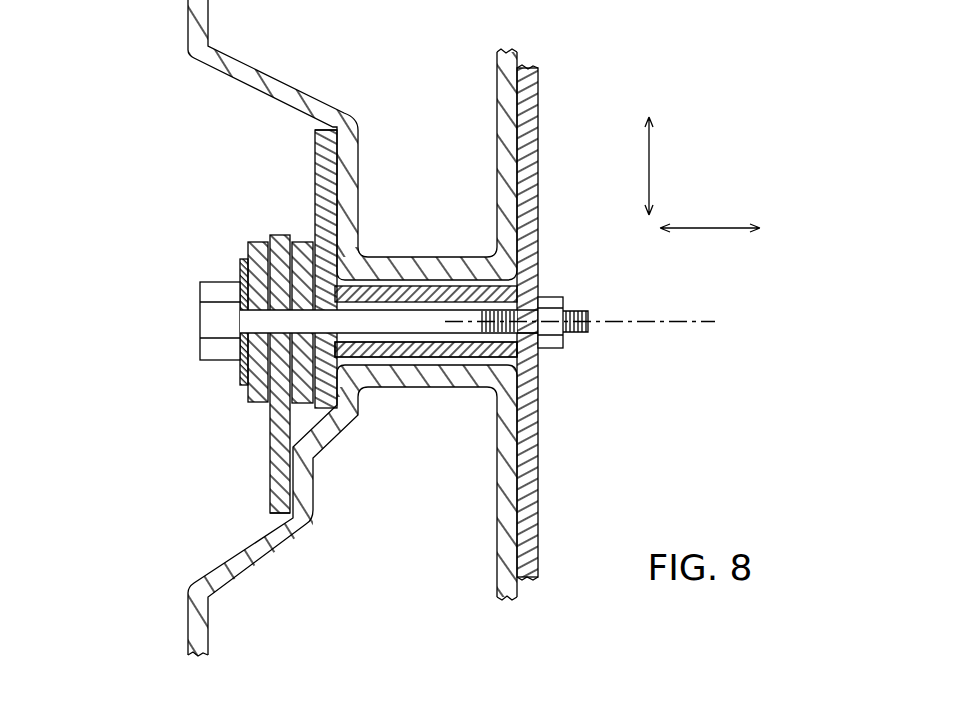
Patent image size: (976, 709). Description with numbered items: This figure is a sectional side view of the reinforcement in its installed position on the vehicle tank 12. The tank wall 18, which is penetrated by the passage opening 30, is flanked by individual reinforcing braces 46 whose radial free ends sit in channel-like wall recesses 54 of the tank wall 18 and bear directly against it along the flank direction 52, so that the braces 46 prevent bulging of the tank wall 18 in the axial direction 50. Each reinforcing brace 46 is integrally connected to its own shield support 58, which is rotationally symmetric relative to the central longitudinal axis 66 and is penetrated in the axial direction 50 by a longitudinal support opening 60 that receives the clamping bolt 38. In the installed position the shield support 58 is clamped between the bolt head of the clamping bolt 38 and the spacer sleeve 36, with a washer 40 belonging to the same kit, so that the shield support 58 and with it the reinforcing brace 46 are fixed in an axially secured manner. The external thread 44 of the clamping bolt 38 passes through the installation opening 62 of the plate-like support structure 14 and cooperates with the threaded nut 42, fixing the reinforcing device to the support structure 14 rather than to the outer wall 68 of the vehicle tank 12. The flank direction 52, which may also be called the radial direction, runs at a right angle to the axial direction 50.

The vehicle tank 12 is at (485, 208).
The support structure 14 is at (527, 175).
The tank wall 18 is at (347, 150).
The passage opening 30 is at (430, 280).
The spacer sleeve 36 is at (432, 361).
The clamping bolt 38 is at (190, 323).
The washer 40 is at (227, 271).
The threaded nut 42 is at (550, 273).
The external thread 44 is at (580, 343).
The reinforcing brace 46 is at (305, 240).
The axial direction 50 is at (710, 228).
The flank direction 52 is at (652, 165).
The wall recess 54 is at (309, 129).
The shield support 58 is at (278, 232).
The support opening 60 is at (392, 335).
The installation opening 62 is at (535, 370).
The central longitudinal axis 66 is at (650, 330).
The outer wall 68 is at (455, 360).